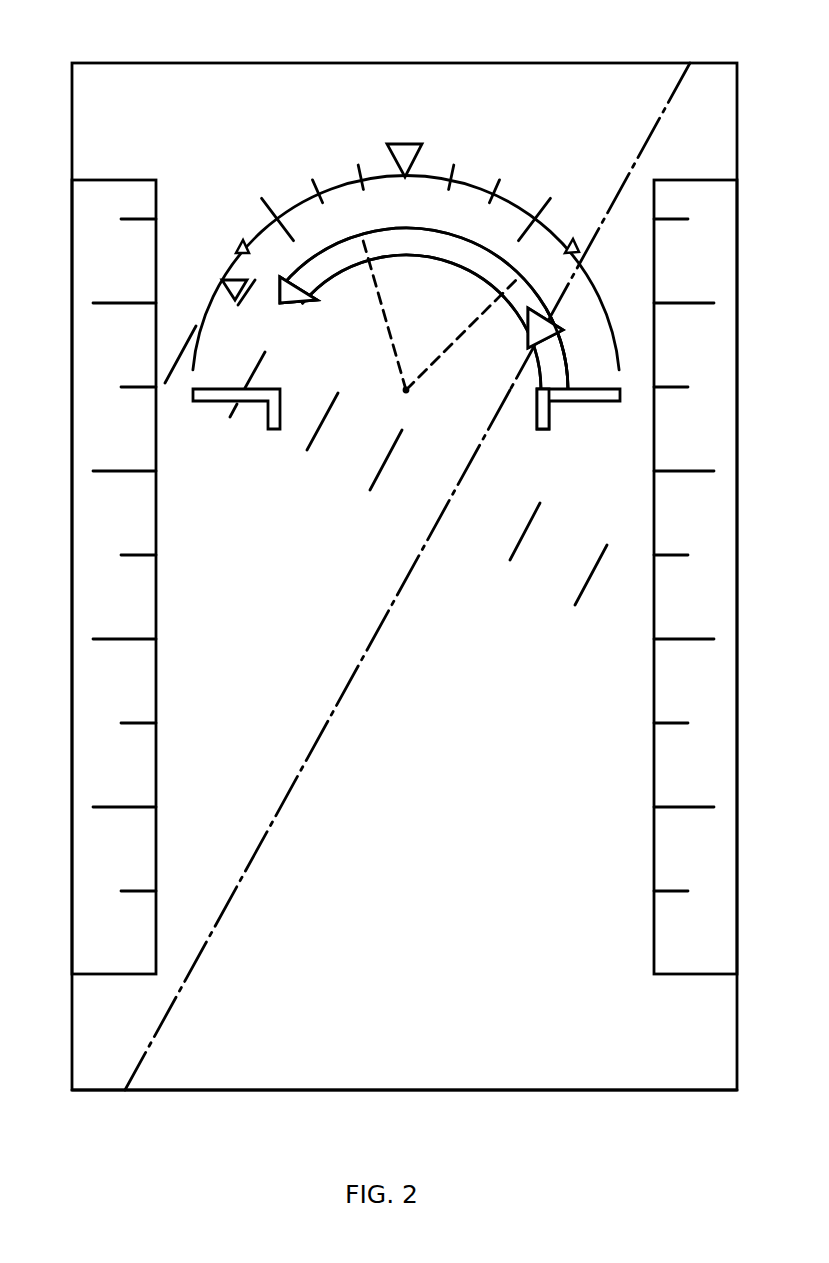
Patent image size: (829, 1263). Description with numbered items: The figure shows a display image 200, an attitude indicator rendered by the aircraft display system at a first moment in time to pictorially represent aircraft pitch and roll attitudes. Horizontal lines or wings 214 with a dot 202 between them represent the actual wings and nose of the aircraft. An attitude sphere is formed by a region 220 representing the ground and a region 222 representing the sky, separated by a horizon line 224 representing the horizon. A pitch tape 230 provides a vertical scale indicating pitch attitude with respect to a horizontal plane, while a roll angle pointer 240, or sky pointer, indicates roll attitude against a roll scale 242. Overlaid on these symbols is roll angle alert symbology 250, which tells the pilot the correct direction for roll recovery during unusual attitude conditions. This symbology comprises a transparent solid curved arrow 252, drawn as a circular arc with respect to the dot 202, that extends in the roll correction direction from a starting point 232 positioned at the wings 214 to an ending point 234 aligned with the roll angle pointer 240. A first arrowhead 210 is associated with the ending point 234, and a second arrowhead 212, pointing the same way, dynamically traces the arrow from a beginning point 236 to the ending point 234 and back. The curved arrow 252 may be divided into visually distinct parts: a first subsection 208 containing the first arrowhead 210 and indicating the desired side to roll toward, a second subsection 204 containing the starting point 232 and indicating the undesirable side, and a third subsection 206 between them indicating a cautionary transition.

The display image 200 is at (108, 62).
The dot 202 is at (405, 393).
The second subsection 204 is at (524, 320).
The third subsection 206 is at (440, 262).
The first subsection 208 is at (333, 265).
The first arrowhead 210 is at (271, 313).
The second arrowhead 212 is at (550, 320).
The wings 214 is at (585, 403).
The region 220 is at (567, 1068).
The region 222 is at (576, 80).
The horizon line 224 is at (235, 895).
The pitch tape 230 is at (652, 615).
The starting point 232 is at (527, 404).
The ending point 234 is at (284, 307).
The beginning point 236 is at (560, 330).
The roll angle pointer 240 is at (232, 281).
The roll scale 242 is at (318, 192).
The roll angle alert symbology 250 is at (430, 230).
The curved arrow 252 is at (324, 276).